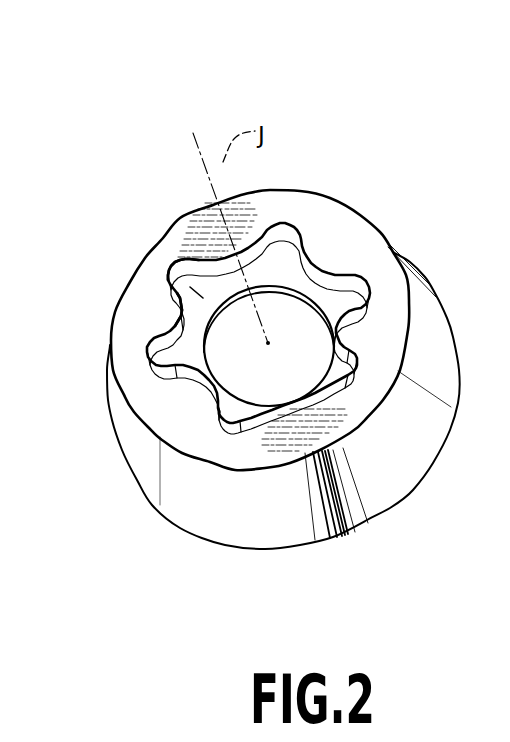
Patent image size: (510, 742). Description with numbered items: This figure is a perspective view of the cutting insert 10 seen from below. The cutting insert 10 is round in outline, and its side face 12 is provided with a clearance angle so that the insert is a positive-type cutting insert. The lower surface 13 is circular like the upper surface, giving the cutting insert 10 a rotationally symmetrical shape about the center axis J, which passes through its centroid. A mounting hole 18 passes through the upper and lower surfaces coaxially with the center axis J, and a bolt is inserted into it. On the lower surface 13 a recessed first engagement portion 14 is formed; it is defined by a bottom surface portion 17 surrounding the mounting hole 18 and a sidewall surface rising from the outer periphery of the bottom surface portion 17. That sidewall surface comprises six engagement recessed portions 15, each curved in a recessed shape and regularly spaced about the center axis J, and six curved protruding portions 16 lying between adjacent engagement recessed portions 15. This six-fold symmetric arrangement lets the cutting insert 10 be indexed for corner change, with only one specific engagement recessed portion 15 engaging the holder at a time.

The cutting insert 10 is at (110, 88).
The side face 12 is at (200, 510).
The lower surface 13 is at (165, 409).
The first engagement portion 14 is at (167, 173).
The engagement recessed portion 15 is at (188, 252).
The curved protruding portion 16 is at (178, 325).
The bottom surface portion 17 is at (183, 277).
The mounting hole 18 is at (160, 377).